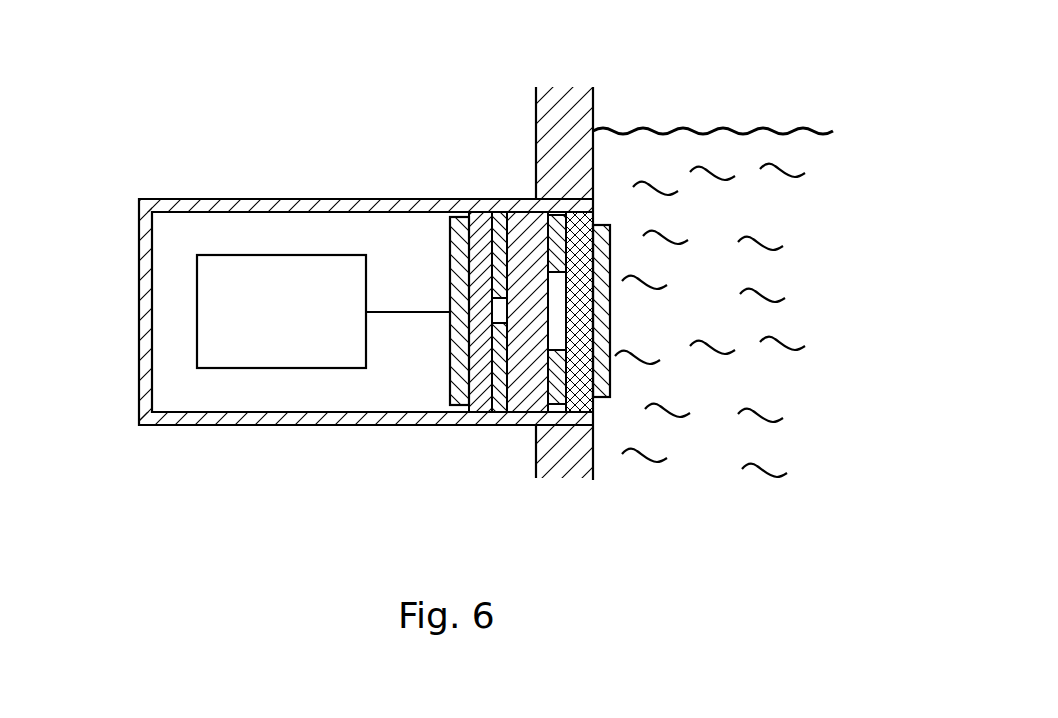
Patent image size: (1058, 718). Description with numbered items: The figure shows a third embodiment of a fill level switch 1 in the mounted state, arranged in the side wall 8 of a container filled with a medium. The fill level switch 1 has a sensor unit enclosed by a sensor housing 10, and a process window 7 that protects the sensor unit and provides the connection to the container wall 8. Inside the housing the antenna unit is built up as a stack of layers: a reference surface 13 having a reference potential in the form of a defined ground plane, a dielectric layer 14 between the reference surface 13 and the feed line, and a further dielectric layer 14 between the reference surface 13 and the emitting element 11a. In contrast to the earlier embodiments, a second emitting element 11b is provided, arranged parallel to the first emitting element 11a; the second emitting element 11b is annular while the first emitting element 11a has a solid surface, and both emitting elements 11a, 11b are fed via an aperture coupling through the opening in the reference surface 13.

The fill level switch 1 is at (130, 111).
The process window 7 is at (572, 478).
The container wall 8 is at (536, 140).
The sensor housing 10 is at (139, 387).
The emitting element 11a is at (613, 243).
The second emitting element 11b is at (597, 210).
The reference surface 13 is at (505, 360).
The dielectric layer 14 is at (571, 200).